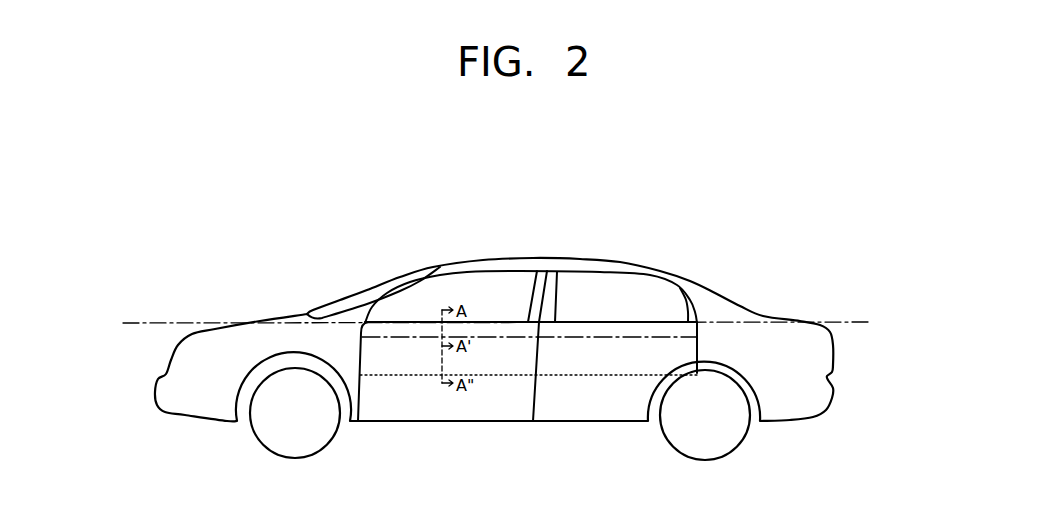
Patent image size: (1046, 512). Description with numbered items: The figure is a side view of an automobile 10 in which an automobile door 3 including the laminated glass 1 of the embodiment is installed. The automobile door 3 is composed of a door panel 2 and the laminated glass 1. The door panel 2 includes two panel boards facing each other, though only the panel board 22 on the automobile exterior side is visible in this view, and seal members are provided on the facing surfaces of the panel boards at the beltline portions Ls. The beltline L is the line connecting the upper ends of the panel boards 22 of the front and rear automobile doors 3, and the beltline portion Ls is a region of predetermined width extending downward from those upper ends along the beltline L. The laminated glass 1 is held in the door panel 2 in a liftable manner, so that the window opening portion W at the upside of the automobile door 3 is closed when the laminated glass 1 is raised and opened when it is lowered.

The automobile 10 is at (772, 218).
The laminated glass 1 is at (483, 285).
The door panel 2 is at (492, 400).
The automobile door 3 is at (398, 312).
The panel board 22 is at (413, 403).
The window opening portion W is at (473, 293).
The beltline portion Ls is at (615, 330).
The beltline L is at (495, 324).